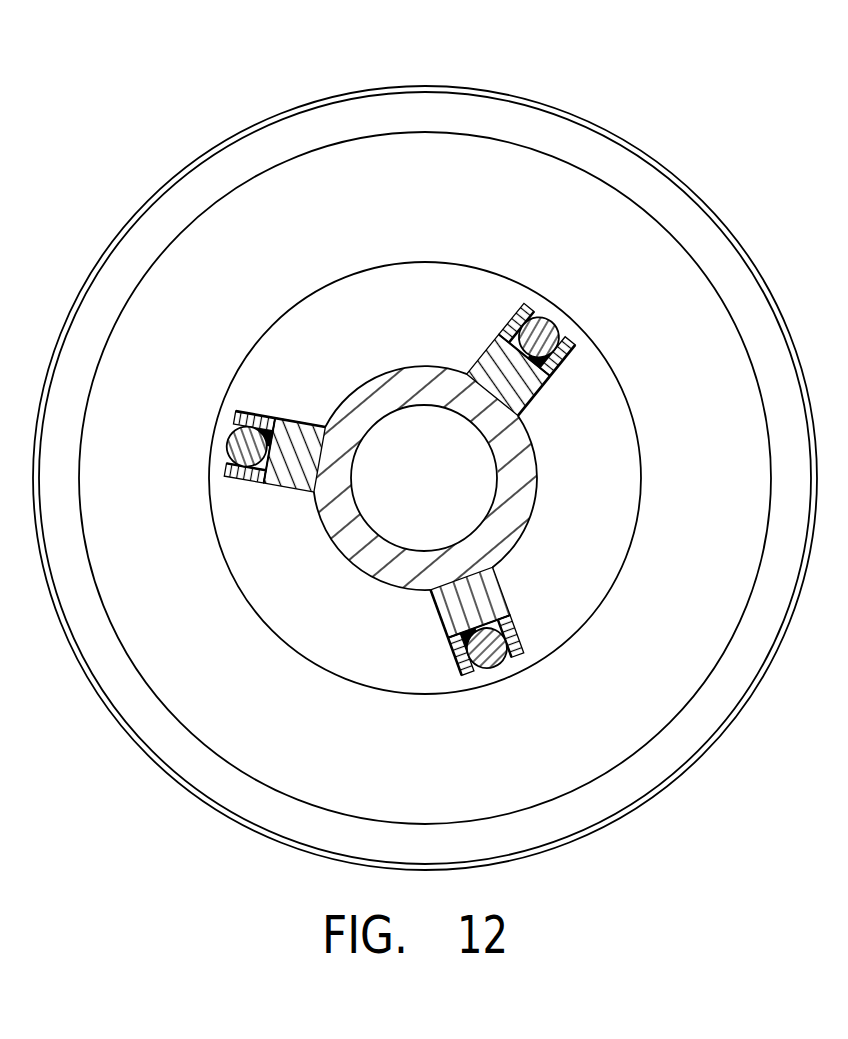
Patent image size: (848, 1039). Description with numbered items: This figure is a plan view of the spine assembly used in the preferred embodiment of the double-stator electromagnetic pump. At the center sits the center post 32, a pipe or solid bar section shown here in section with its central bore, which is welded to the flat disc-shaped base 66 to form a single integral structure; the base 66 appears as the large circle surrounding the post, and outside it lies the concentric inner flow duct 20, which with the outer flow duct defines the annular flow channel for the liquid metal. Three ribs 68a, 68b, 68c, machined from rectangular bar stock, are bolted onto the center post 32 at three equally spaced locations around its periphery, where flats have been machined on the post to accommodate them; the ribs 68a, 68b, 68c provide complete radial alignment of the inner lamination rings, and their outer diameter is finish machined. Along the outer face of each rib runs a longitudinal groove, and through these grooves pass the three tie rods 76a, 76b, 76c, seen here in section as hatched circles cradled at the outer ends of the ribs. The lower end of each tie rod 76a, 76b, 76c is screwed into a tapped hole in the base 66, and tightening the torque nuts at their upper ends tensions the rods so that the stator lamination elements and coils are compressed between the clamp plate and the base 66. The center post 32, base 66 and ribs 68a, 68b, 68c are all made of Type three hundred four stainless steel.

The inner flow duct 20 is at (168, 185).
The center post 32 is at (400, 367).
The base 66 is at (658, 540).
The rib 68a is at (540, 398).
The rib 68b is at (453, 665).
The rib 68c is at (285, 487).
The tie rod 76a is at (553, 323).
The tie rod 76b is at (499, 664).
The tie rod 76c is at (226, 446).